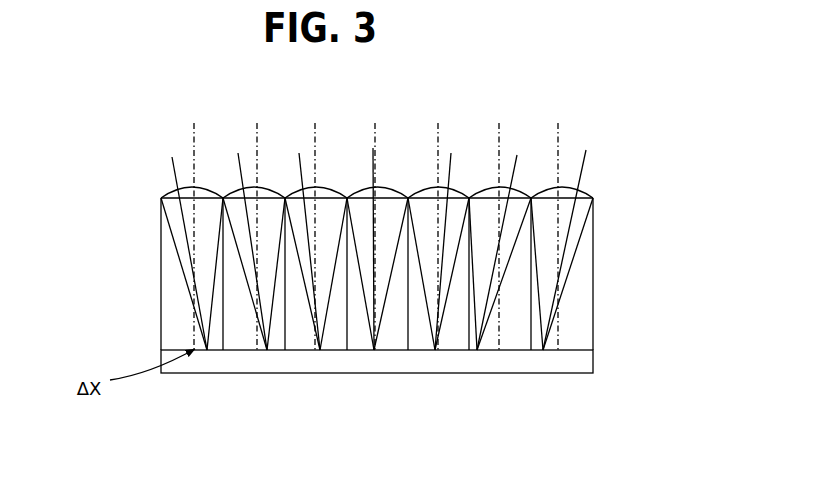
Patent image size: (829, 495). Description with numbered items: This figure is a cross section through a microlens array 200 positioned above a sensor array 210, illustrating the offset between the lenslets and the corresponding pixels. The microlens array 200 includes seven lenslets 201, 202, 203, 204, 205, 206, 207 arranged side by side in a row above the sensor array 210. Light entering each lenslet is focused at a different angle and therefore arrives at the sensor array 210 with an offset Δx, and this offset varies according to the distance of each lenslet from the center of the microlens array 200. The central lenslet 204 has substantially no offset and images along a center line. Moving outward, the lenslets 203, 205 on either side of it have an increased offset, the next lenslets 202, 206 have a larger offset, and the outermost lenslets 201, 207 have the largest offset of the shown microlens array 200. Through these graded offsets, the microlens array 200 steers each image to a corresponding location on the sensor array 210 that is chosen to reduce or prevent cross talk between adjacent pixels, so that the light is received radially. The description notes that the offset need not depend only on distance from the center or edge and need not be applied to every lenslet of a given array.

The microlens array 200 is at (166, 194).
The lenslet 201 is at (200, 188).
The lenslet 202 is at (270, 186).
The lenslet 203 is at (328, 184).
The lenslet 204 is at (392, 186).
The lenslet 205 is at (438, 183).
The lenslet 206 is at (522, 186).
The lenslet 207 is at (586, 189).
The sensor array 210 is at (597, 363).